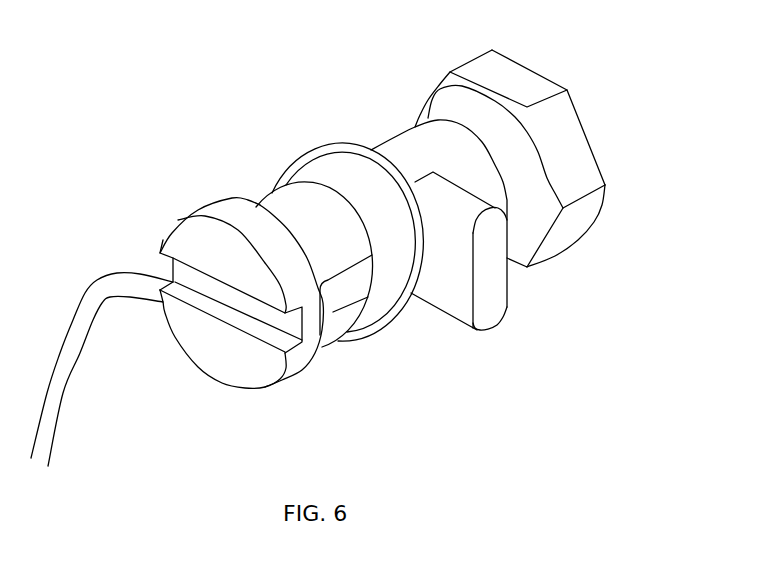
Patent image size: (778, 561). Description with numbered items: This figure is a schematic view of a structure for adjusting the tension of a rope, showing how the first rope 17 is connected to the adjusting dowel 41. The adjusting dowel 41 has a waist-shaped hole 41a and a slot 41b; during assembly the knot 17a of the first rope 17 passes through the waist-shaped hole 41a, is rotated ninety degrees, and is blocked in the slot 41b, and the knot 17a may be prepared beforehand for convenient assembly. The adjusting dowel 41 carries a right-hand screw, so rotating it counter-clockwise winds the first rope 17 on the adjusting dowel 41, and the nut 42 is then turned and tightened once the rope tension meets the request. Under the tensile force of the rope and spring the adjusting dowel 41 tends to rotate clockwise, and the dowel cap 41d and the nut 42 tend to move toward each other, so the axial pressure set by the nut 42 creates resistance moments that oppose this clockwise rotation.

The first rope 17 is at (70, 357).
The knot 17a is at (462, 300).
The adjusting dowel 41 is at (262, 196).
The waist-shaped hole 41a is at (333, 300).
The slot 41b is at (412, 190).
The dowel cap 41d is at (245, 372).
The nut 42 is at (578, 228).